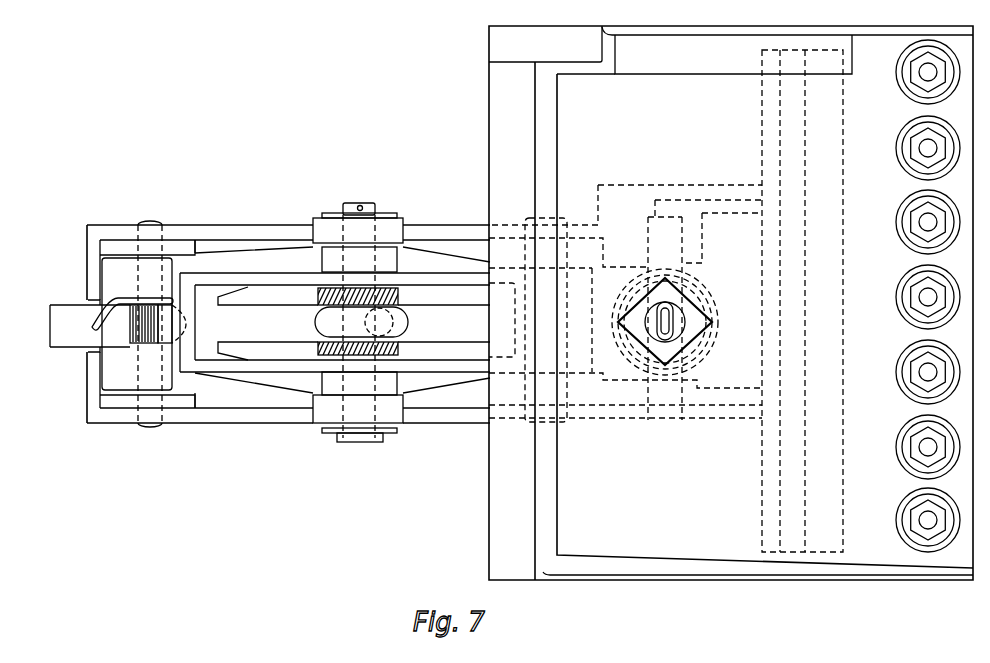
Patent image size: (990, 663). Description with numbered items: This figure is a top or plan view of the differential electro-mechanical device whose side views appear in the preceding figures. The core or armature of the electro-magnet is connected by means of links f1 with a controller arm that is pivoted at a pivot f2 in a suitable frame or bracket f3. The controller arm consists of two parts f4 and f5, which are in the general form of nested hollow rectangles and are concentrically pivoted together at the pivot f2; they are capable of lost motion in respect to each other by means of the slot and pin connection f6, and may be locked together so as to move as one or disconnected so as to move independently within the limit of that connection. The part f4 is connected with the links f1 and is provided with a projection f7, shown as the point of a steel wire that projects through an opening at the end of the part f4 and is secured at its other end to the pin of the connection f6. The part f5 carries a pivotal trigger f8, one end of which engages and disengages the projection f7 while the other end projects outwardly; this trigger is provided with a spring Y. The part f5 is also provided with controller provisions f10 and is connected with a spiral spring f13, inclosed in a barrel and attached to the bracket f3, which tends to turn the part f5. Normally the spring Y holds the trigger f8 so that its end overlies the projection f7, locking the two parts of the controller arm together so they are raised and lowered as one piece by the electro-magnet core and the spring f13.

The links f1 is at (315, 290).
The pivot f2 is at (565, 420).
The frame or bracket f3 is at (632, 185).
The controller arm part f4 is at (285, 378).
The controller arm part f5 is at (440, 418).
The slot and pin connection f6 is at (348, 437).
The projection f7 is at (365, 323).
The pivotal trigger f8 is at (130, 340).
The controller provisions f10 is at (832, 351).
The spiral spring f13 is at (728, 267).
The spring Y is at (131, 298).